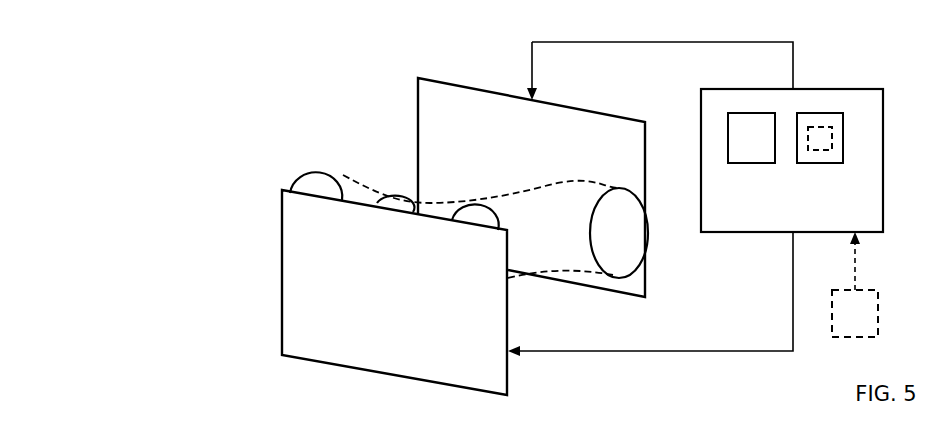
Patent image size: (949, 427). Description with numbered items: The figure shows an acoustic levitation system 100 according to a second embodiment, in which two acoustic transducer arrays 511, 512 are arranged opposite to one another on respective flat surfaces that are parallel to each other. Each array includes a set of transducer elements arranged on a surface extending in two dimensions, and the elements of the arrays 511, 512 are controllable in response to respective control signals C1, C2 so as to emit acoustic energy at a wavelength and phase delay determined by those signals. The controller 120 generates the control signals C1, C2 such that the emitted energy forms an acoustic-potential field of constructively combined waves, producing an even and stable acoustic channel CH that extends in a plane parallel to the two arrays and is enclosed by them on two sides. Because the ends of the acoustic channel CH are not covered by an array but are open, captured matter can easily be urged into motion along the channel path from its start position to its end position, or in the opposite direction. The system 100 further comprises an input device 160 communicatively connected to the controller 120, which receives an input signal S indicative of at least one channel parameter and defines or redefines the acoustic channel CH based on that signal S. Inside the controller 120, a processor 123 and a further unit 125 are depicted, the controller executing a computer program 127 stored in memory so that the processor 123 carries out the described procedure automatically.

The acoustic levitation system 100 is at (222, 134).
The acoustic transducer array 511 is at (297, 313).
The acoustic transducer array 512 is at (420, 103).
The acoustic channel CH is at (342, 168).
The control signal C1 is at (660, 71).
The control signal C2 is at (650, 294).
The controller 120 is at (842, 89).
The processor 123 is at (750, 163).
The second module 125 is at (818, 163).
The computer program 127 is at (833, 138).
The input signal S is at (846, 261).
The input device 160 is at (880, 312).